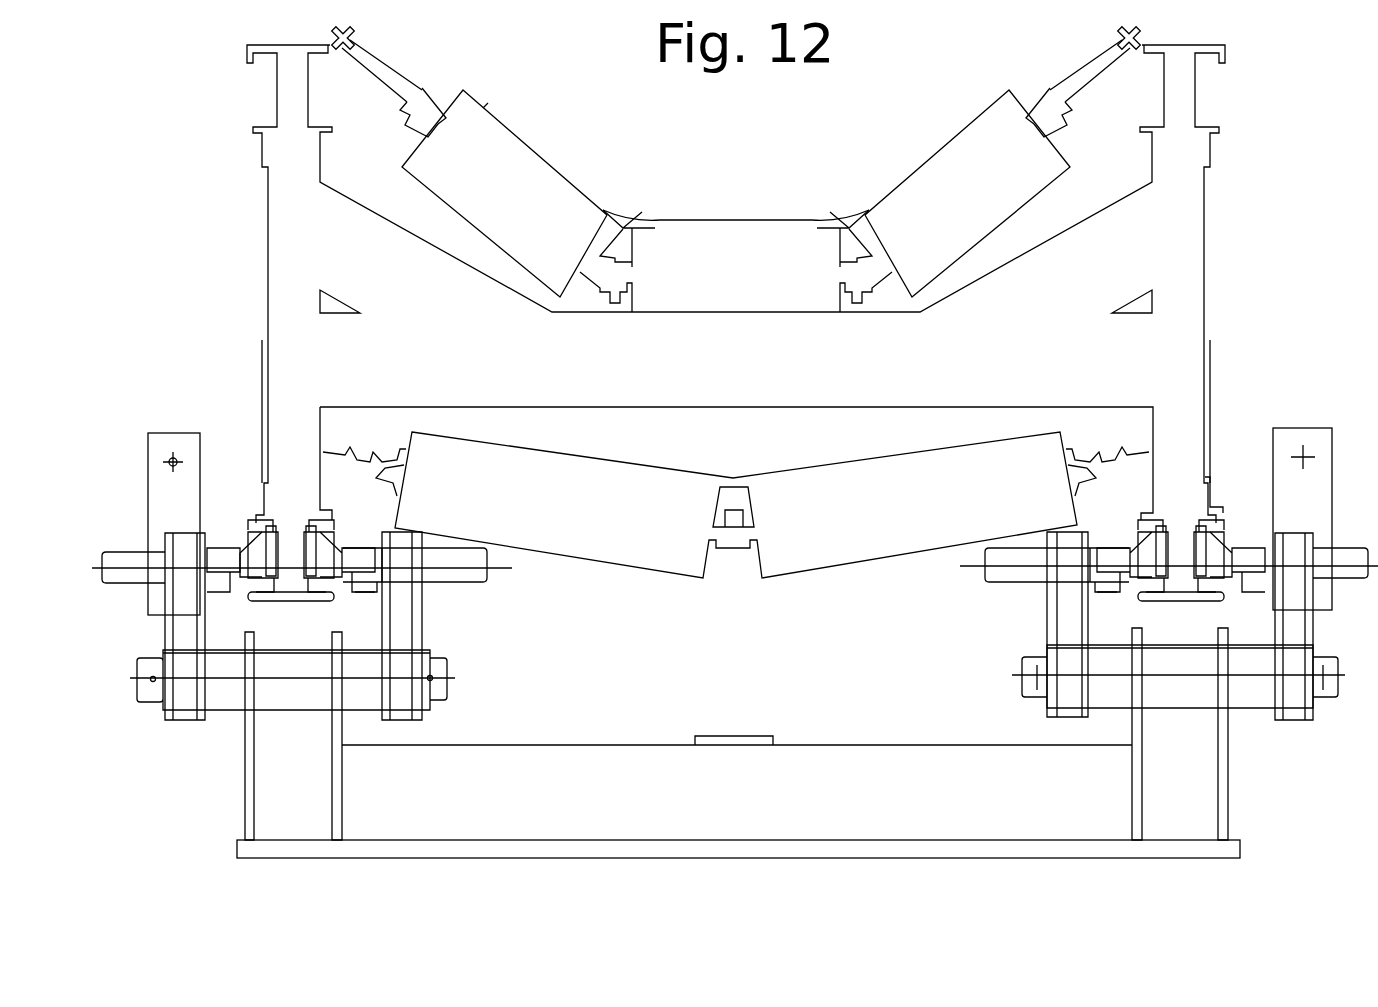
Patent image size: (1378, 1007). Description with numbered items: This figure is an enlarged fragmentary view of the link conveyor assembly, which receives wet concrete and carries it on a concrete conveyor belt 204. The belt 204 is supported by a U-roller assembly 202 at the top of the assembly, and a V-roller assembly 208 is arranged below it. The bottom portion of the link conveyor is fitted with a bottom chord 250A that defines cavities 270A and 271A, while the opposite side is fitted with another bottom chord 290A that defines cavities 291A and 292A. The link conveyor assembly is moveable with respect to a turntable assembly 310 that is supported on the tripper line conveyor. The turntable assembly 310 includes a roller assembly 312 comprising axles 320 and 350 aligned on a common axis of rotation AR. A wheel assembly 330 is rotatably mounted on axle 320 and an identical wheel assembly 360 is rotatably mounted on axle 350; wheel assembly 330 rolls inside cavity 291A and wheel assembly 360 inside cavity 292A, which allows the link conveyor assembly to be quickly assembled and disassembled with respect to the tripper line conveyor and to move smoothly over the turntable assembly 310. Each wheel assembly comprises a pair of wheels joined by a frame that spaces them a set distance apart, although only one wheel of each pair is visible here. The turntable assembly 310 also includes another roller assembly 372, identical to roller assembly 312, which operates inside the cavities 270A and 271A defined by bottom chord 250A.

The U-roller assembly 202 is at (478, 100).
The concrete conveyor belt 204 is at (631, 214).
The V-roller assembly 208 is at (903, 557).
The bottom chord 250A is at (1224, 507).
The cavity 270A is at (1236, 532).
The cavity 271A is at (1127, 533).
The bottom chord 290A is at (250, 518).
The cavity 291A is at (351, 535).
The cavity 292A is at (241, 525).
The turntable assembly 310 is at (598, 739).
The roller assembly 312 is at (443, 597).
The axle 320 is at (462, 582).
The wheel assembly 330 is at (341, 536).
The axle 350 is at (118, 585).
The wheel assembly 360 is at (232, 534).
The roller assembly 372 is at (1036, 585).
The axis of rotation AR is at (494, 569).